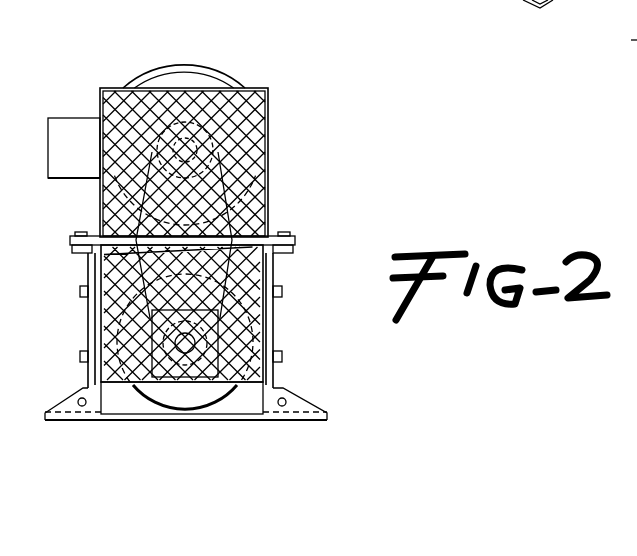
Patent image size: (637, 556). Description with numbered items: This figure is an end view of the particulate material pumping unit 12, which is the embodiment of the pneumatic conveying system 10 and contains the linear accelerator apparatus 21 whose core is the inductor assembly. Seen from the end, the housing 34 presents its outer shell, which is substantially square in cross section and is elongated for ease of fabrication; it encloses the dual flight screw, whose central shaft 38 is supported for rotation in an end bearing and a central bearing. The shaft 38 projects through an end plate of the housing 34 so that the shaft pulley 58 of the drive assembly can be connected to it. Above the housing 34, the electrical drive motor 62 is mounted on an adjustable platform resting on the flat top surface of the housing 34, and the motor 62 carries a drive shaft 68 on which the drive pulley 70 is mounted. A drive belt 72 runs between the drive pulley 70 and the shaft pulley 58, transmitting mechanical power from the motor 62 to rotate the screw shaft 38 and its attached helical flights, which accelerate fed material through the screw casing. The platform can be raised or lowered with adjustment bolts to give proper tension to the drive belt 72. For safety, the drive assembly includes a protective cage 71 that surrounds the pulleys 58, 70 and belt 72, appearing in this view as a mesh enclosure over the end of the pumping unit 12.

The pneumatic conveying system 10 is at (306, 122).
The particulate material pumping unit 12 is at (78, 314).
The linear accelerator apparatus 21 is at (620, 45).
The housing 34 is at (276, 345).
The central shaft 38 is at (187, 388).
The shaft pulley 58 is at (223, 390).
The electrical drive motor 62 is at (186, 60).
The drive shaft 68 is at (246, 84).
The drive pulley 70 is at (272, 171).
The protective cage 71 is at (128, 90).
The drive belt 72 is at (273, 213).